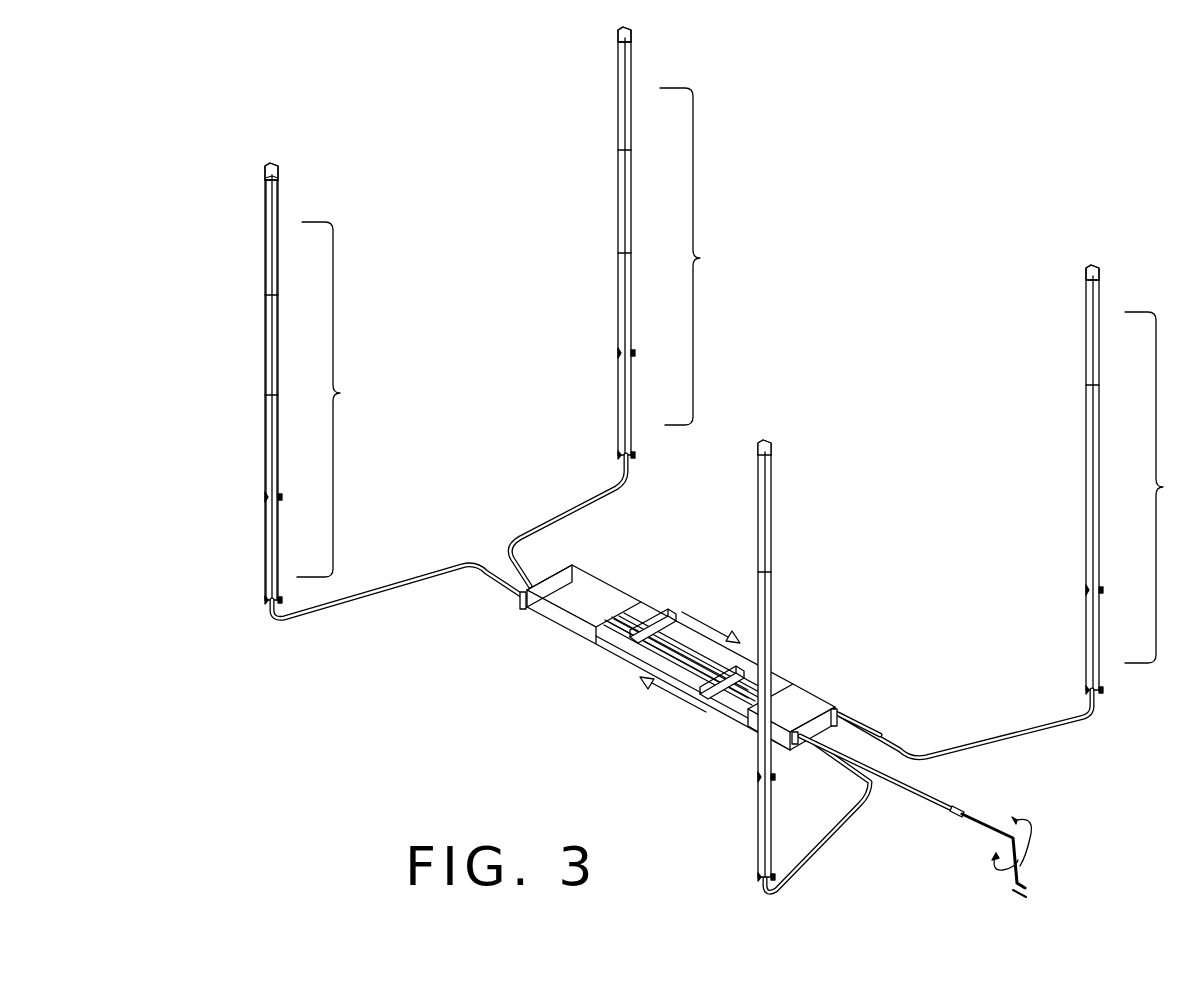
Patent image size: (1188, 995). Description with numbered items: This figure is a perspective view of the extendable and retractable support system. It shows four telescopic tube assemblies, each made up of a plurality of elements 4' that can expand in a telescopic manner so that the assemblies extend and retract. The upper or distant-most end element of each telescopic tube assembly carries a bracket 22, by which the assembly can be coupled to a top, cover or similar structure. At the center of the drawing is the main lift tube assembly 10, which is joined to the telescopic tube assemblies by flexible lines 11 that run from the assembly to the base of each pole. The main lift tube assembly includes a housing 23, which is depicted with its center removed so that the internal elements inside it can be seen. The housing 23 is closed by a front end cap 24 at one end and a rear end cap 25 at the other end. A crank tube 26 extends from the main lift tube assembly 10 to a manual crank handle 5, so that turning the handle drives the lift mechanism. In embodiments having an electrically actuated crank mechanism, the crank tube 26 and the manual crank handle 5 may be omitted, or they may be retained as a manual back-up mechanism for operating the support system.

The element 4' is at (221, 390).
The manual crank handle 5 is at (1030, 882).
The main lift tube assembly 10 is at (574, 586).
The cable 11 is at (382, 598).
The bracket 22 is at (268, 170).
The housing 23 is at (590, 625).
The front end cap 24 is at (521, 604).
The rear end cap 25 is at (848, 711).
The crank tube 26 is at (920, 783).